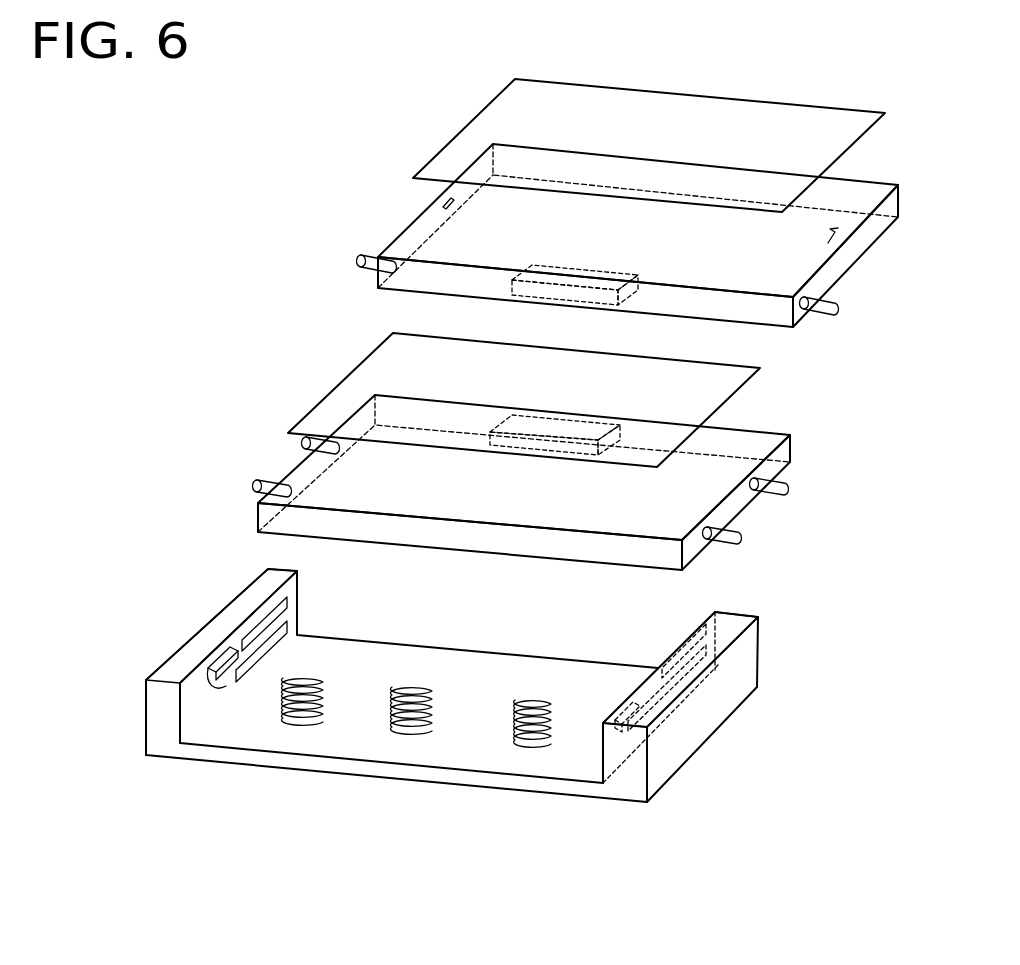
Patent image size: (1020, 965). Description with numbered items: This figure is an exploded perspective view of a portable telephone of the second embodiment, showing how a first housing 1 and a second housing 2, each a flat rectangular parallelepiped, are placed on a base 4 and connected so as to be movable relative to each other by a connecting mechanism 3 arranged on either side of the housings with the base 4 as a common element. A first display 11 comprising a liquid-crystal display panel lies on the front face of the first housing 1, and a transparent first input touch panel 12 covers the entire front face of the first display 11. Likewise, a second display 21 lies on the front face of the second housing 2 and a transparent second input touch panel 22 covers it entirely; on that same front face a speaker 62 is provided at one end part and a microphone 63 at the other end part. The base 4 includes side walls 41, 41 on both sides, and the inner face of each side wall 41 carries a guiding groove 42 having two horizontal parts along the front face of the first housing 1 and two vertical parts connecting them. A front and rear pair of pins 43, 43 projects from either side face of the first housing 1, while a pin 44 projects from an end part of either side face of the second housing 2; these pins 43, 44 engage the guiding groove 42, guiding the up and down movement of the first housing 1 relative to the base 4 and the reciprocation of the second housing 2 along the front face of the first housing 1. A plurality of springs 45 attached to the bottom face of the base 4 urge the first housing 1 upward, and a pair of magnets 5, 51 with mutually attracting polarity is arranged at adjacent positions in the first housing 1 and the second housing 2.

The first housing 1 is at (504, 459).
The second housing 2 is at (604, 262).
The connecting mechanism 3 is at (268, 352).
The base 4 is at (433, 711).
The magnet 5 is at (572, 413).
The first display 11 is at (334, 478).
The first input touch panel 12 is at (372, 373).
The second display 21 is at (443, 243).
The second input touch panel 22 is at (487, 122).
The side wall 41 is at (155, 728).
The guiding groove 42 is at (243, 672).
The pin 43 is at (300, 442).
The pin 44 is at (365, 258).
The spring 45 is at (290, 718).
The magnet 51 is at (577, 303).
The speaker 62 is at (443, 200).
The microphone 63 is at (843, 229).